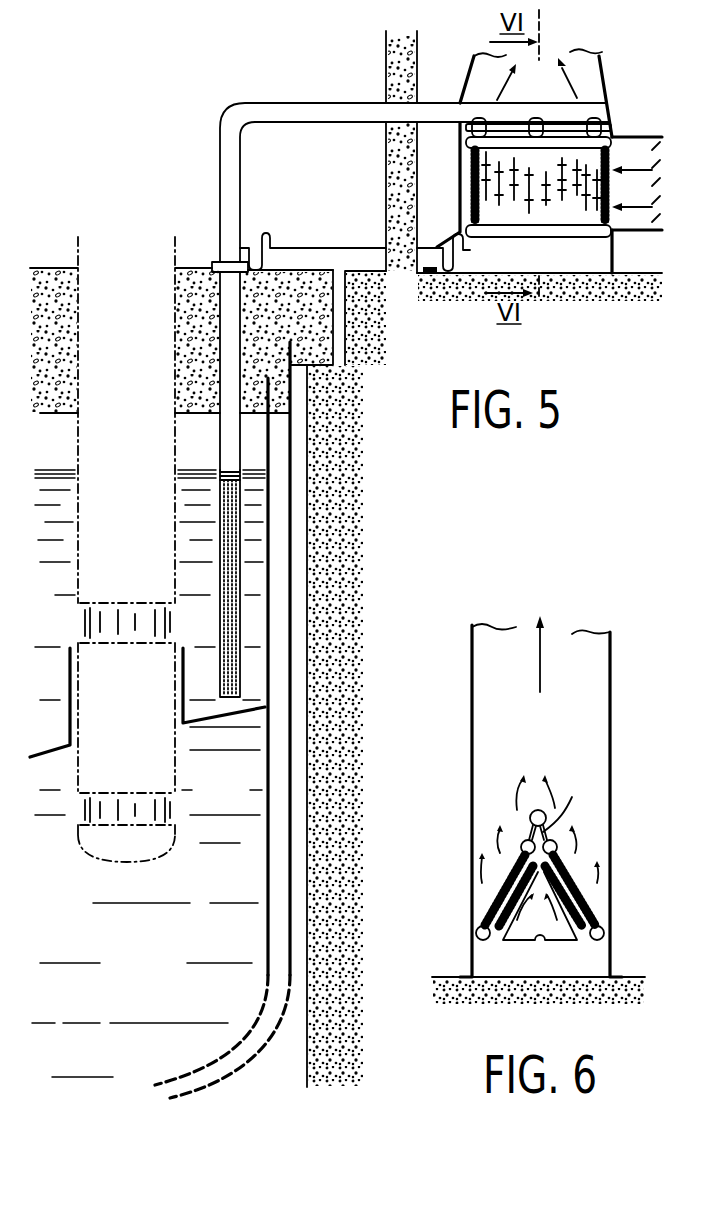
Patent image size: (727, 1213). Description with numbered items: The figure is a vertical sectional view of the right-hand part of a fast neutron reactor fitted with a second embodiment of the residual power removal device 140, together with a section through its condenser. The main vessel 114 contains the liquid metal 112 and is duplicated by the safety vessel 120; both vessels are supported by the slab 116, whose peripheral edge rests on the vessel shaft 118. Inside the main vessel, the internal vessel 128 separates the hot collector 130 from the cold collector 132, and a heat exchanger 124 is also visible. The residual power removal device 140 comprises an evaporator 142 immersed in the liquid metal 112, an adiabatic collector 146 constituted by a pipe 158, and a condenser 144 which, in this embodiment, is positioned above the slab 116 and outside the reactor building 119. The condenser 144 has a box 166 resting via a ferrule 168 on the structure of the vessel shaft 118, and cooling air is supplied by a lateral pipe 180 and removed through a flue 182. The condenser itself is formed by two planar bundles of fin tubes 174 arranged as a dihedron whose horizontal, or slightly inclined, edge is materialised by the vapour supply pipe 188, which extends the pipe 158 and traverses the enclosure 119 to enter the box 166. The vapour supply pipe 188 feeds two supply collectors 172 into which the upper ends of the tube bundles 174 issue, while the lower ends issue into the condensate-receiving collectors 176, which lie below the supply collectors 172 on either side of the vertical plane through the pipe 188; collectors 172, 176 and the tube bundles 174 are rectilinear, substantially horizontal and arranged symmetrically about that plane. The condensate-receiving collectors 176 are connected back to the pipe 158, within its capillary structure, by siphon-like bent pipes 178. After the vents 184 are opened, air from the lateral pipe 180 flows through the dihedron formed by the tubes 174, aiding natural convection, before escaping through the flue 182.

In FIG. 5, the liquid metal 112 is at (50, 483).
In FIG. 5, the main vessel 114 is at (292, 834).
In FIG. 5, the slab 116 is at (58, 298).
In FIG. 5, the vessel shaft 118 is at (370, 727).
In FIG. 5, the reactor building 119 is at (398, 70).
In FIG. 5, the safety vessel 120 is at (292, 967).
In FIG. 5, the heat exchanger 124 is at (72, 830).
In FIG. 5, the internal vessel 128 is at (210, 725).
In FIG. 5, the hot collector 130 is at (68, 627).
In FIG. 5, the cold collector 132 is at (162, 1000).
In FIG. 5, the residual power removal device 140 is at (256, 443).
In FIG. 5, the evaporator 142 is at (254, 581).
In FIG. 5, the condenser 144 is at (608, 60).
In FIG. 5, the adiabatic collector 146 is at (220, 102).
In FIG. 5, the pipe 158 is at (234, 333).
In FIG. 5, the box 166 is at (468, 160).
In FIG. 5, the ferrule 168 is at (612, 264).
In FIG. 6, the supply collectors 172 is at (552, 840).
In FIG. 5, the fin tubes 174 is at (472, 196).
In FIG. 6, the fin tubes 174 is at (578, 866).
In FIG. 6, the condensate-receiving collectors 176 is at (485, 941).
In FIG. 5, the siphon-like bent pipes 178 is at (292, 246).
In FIG. 5, the lateral pipe 180 is at (618, 137).
In FIG. 6, the lateral pipe 180 is at (548, 945).
In FIG. 5, the flue 182 is at (464, 70).
In FIG. 5, the vents 184 is at (626, 234).
In FIG. 6, the vapour supply pipe 188 is at (537, 809).